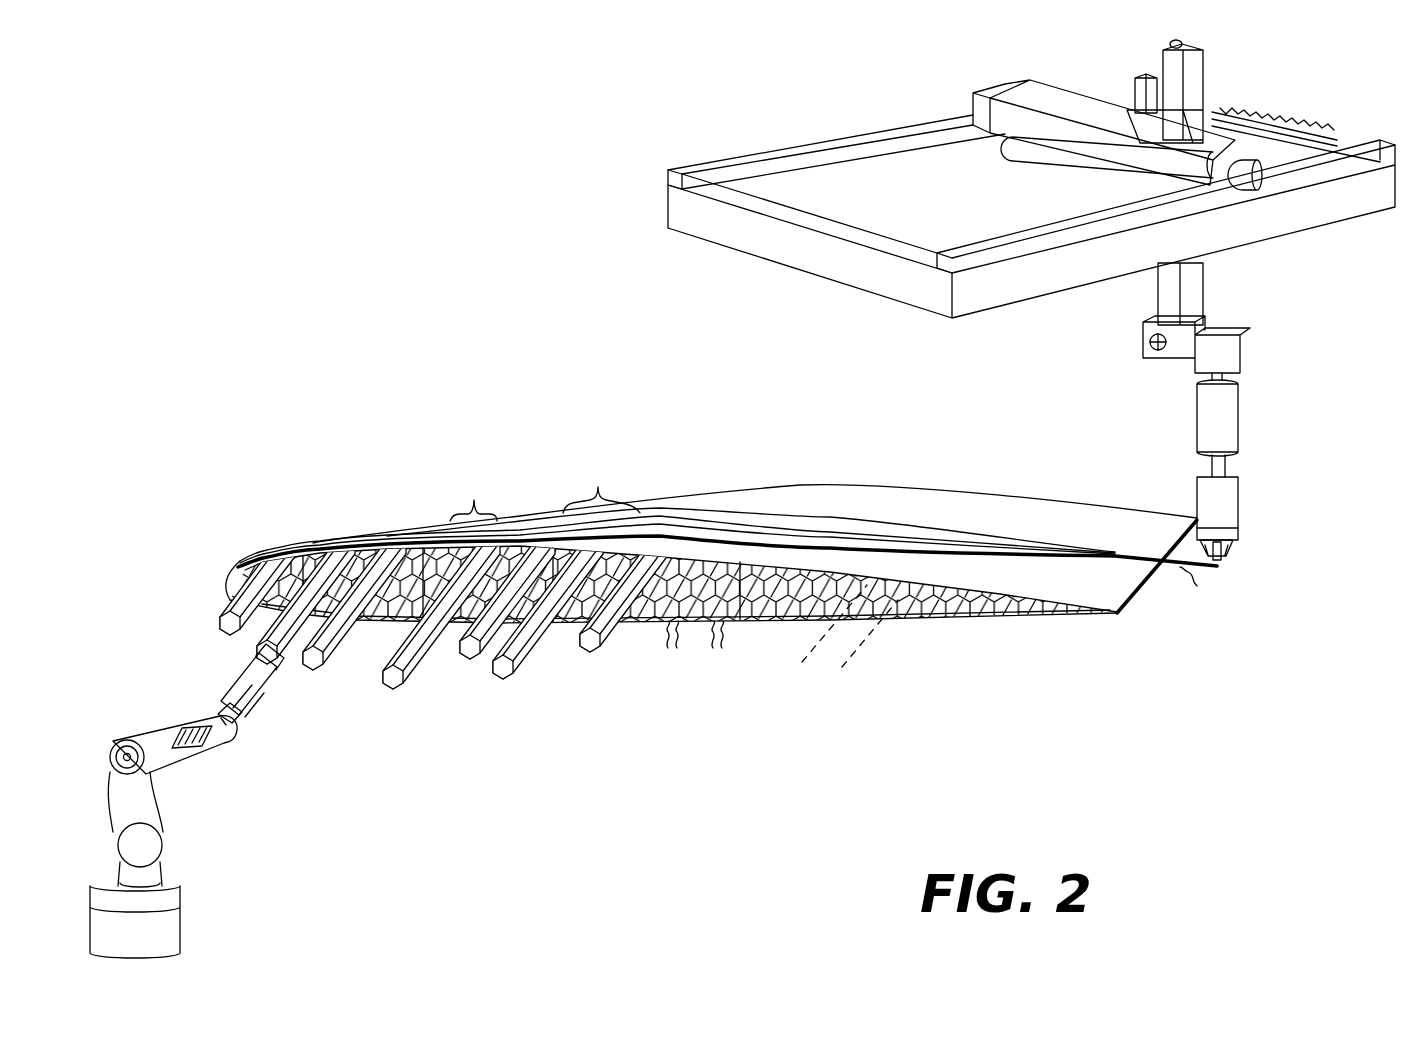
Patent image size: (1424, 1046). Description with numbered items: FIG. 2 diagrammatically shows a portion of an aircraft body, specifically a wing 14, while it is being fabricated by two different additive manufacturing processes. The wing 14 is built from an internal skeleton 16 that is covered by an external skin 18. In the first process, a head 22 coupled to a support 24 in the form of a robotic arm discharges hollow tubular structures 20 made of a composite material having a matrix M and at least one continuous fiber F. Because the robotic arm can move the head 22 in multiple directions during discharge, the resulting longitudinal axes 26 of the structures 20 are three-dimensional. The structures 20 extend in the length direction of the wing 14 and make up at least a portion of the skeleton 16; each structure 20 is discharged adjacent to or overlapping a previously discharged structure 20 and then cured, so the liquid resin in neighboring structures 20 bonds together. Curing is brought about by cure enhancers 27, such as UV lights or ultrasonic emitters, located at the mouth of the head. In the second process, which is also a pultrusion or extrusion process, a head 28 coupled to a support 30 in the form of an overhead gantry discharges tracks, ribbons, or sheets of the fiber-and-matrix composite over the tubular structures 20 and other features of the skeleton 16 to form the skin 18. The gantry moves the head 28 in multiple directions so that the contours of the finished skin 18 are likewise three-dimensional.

The wing 14 is at (445, 372).
The skeleton 16 is at (948, 619).
The skin 18 is at (948, 503).
The hollow tubular structures 20 is at (393, 664).
The head 22 is at (267, 690).
The support 24 is at (150, 856).
The longitudinal axes 26 is at (858, 652).
The cure enhancers 27 is at (1235, 545).
The head 28 is at (1227, 505).
The support 30 is at (808, 255).